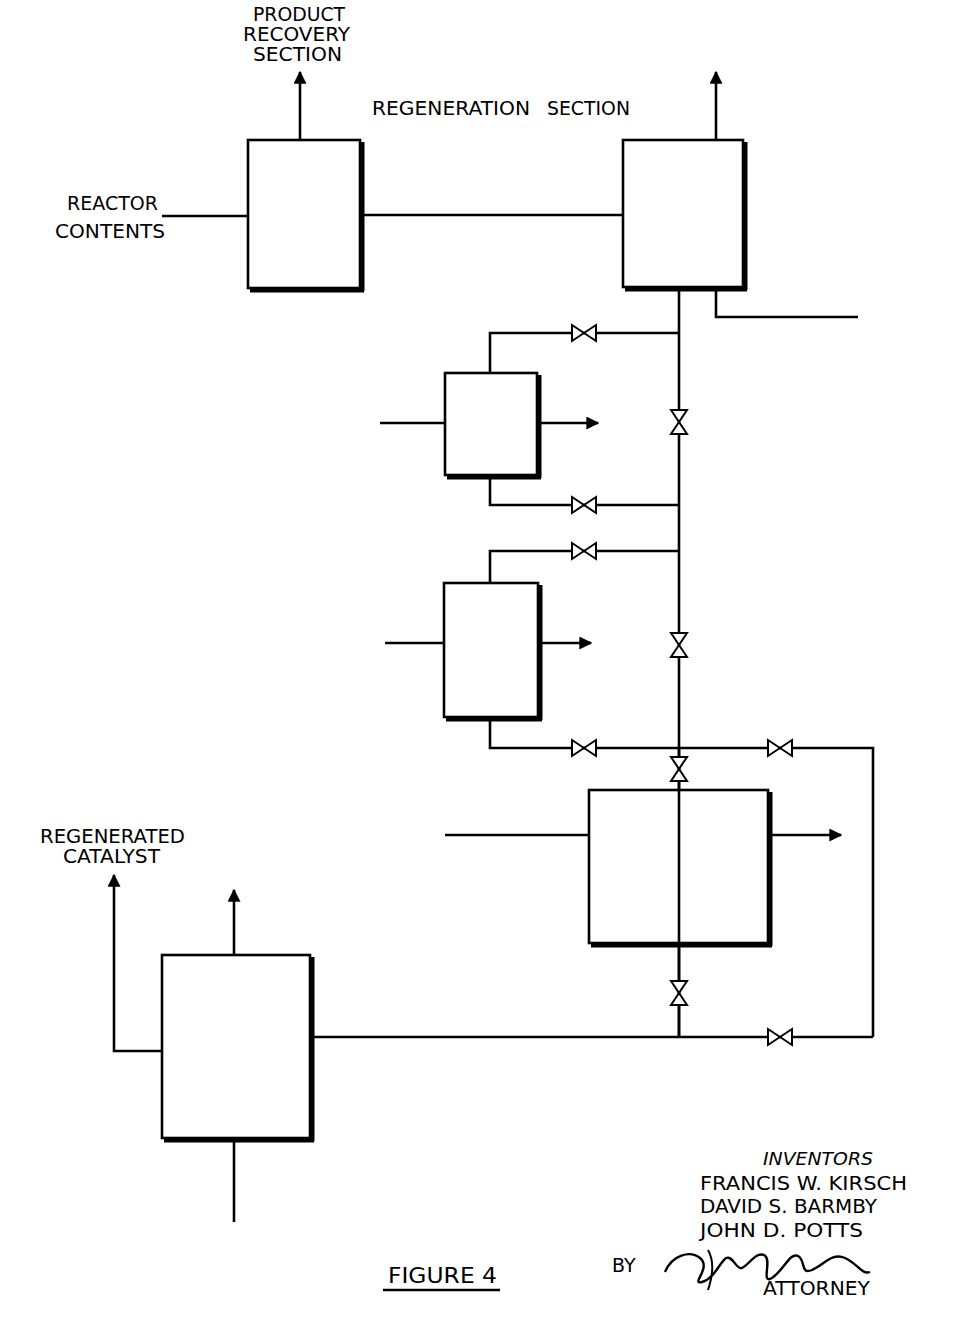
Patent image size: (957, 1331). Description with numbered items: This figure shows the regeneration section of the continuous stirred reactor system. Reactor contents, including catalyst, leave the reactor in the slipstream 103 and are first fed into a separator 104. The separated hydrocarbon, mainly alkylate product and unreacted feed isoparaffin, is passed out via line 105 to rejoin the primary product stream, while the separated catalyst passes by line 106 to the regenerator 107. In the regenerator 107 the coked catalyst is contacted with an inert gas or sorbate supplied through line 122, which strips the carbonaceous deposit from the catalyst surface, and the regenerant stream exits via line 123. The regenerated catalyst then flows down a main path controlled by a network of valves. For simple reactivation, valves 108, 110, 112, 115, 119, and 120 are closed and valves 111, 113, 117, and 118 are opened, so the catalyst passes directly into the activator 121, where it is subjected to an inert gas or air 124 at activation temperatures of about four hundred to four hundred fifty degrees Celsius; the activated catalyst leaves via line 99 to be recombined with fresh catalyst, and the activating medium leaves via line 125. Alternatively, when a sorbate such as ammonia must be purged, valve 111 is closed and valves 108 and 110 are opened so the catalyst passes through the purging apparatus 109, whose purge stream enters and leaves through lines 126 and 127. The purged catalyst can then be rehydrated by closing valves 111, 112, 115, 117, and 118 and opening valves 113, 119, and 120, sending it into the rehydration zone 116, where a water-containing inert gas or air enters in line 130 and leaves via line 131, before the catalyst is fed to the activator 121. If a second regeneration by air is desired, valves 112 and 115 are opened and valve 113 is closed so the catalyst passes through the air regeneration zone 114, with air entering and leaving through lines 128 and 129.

The line 99 is at (122, 917).
The slipstream 103 is at (232, 212).
The separator 104 is at (363, 188).
The line 105 is at (297, 122).
The line 106 is at (480, 213).
The regenerator 107 is at (748, 223).
The valve 108 is at (583, 323).
The purging apparatus 109 is at (440, 388).
The valve 110 is at (585, 497).
The valve 111 is at (690, 425).
The valve 112 is at (597, 548).
The valve 113 is at (695, 642).
The air regeneration zone 114 is at (440, 607).
The valve 115 is at (575, 733).
The rehydration zone 116 is at (582, 902).
The valve 117 is at (778, 733).
The valve 118 is at (785, 1027).
The valve 119 is at (688, 770).
The valve 120 is at (685, 993).
The activator 121 is at (315, 1092).
The line 122 is at (765, 310).
The line 123 is at (722, 110).
The inert gas or air 124 is at (243, 1180).
The line 125 is at (240, 928).
The line 126 is at (430, 428).
The line 127 is at (560, 418).
The line 128 is at (422, 652).
The line 129 is at (560, 638).
The line 130 is at (483, 828).
The line 131 is at (785, 828).